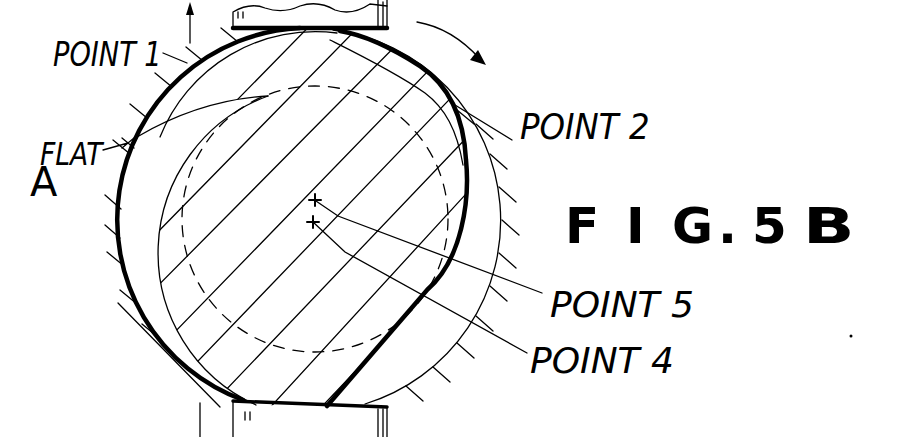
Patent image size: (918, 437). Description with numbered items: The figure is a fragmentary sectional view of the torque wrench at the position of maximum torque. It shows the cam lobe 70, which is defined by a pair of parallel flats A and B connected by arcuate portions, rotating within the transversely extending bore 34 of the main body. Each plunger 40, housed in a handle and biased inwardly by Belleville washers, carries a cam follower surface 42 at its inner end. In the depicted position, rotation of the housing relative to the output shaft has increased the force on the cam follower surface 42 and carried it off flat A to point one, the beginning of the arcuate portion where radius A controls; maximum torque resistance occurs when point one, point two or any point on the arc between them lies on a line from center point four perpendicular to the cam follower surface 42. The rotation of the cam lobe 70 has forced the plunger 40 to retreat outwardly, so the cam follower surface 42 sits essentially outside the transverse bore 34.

The transversely extending bore 34 is at (158, 98).
The plunger 40 is at (402, 436).
The cam follower surface 42 is at (405, 32).
The cam lobe 70 is at (266, 210).